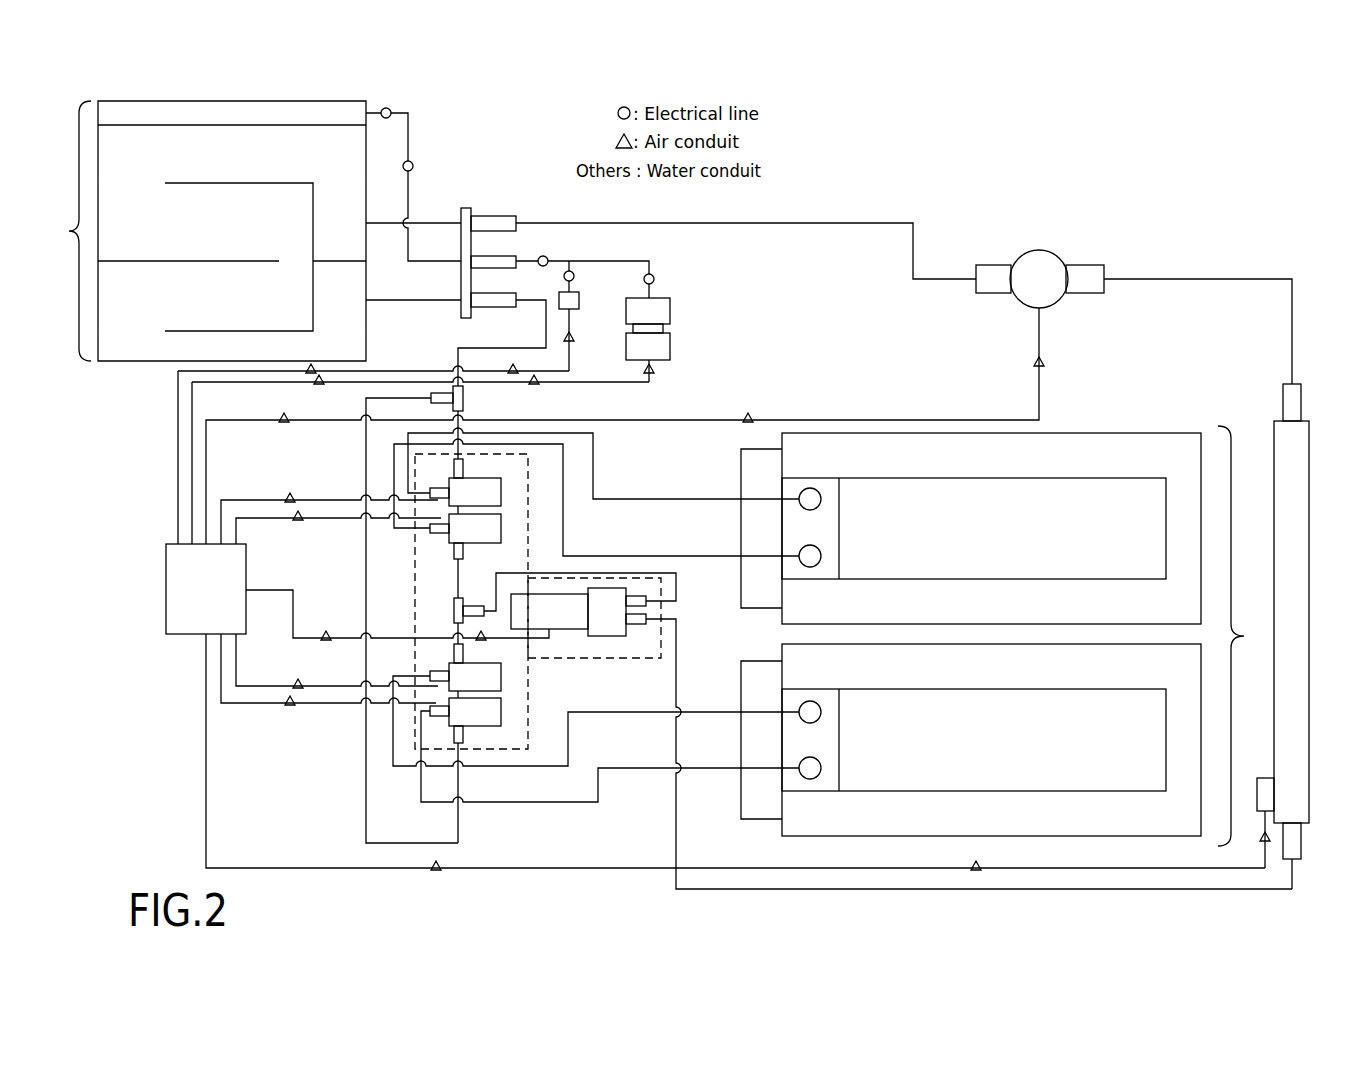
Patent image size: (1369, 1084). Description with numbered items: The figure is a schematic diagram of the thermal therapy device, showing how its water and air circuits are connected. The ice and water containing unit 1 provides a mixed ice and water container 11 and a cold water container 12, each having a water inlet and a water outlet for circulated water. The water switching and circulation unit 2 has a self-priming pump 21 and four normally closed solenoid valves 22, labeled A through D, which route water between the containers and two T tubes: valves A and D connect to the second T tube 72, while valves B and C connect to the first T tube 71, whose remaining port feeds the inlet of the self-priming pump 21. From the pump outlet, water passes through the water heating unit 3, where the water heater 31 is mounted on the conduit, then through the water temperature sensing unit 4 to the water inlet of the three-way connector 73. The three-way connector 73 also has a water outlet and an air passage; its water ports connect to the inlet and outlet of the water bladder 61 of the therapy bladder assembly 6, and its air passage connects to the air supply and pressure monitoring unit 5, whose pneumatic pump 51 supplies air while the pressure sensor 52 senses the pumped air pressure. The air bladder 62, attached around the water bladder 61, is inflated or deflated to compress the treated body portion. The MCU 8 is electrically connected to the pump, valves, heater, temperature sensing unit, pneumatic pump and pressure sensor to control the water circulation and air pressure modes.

The ice and water containing unit 1 is at (1003, 628).
The mixed ice and water container 11 is at (1112, 431).
The cold water container 12 is at (1118, 836).
The water switching and circulation unit 2 is at (586, 619).
The self-priming pump 21 is at (545, 592).
The solenoid valves 22 is at (432, 706).
The water heating unit 3 is at (1309, 636).
The water heater 31 is at (1308, 493).
The water temperature sensing unit 4 is at (1082, 263).
The air supply and pressure monitoring unit 5 is at (644, 295).
The pneumatic pump 51 is at (672, 308).
The pressure sensor 52 is at (580, 292).
The therapy bladder assembly 6 is at (204, 234).
The water bladder 61 is at (145, 362).
The air bladder 62 is at (250, 100).
The first T tube 71 is at (464, 597).
The second T tube 72 is at (465, 398).
The three-way connector 73 is at (465, 207).
The micro-controller unit 8 is at (165, 610).